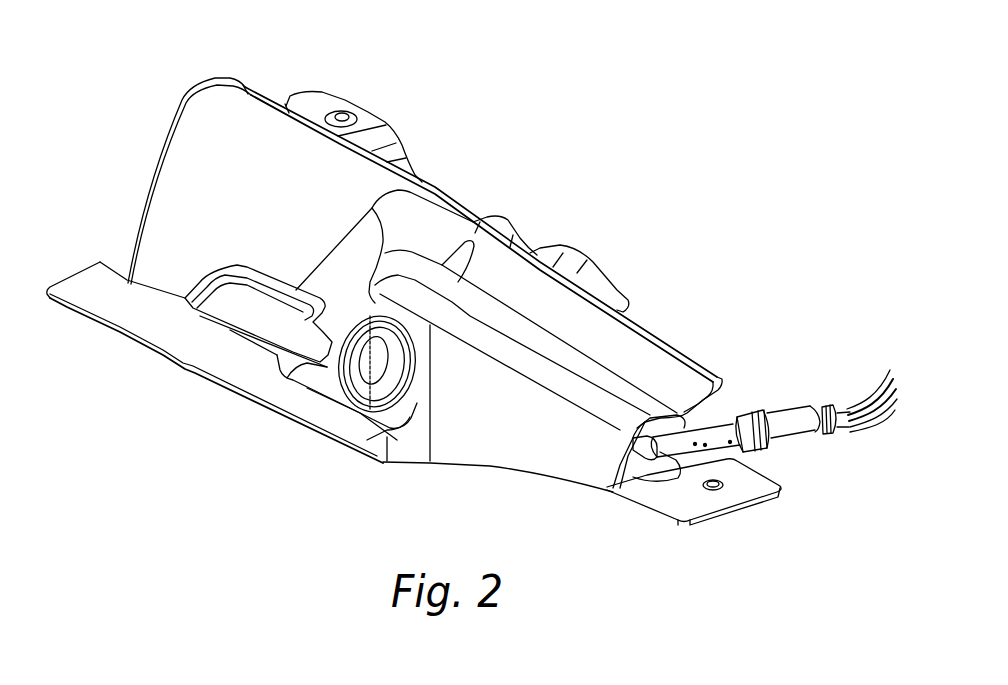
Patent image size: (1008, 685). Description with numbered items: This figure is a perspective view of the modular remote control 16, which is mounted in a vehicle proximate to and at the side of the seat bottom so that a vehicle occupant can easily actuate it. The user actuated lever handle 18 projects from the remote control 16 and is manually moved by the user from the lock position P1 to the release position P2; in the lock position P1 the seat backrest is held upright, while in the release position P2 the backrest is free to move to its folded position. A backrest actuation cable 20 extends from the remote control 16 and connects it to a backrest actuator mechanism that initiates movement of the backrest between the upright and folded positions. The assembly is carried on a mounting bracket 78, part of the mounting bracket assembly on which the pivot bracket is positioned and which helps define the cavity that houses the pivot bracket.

The modular remote control 16 is at (605, 56).
The user actuated lever handle 18 is at (233, 290).
The backrest actuation cable 20 is at (800, 415).
The mounting bracket 78 is at (713, 500).
The lock position P1 is at (268, 283).
The release position P2 is at (258, 272).